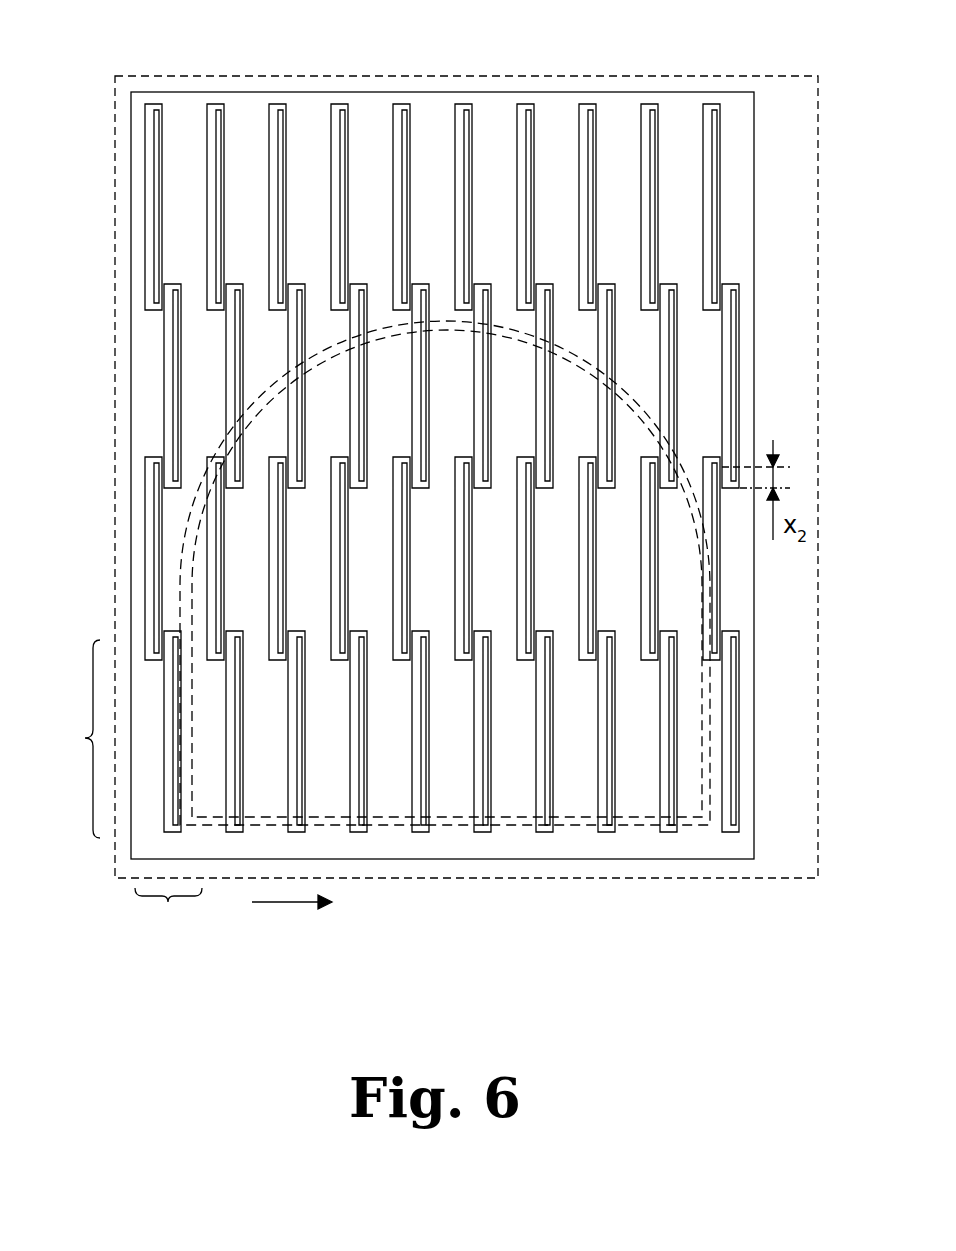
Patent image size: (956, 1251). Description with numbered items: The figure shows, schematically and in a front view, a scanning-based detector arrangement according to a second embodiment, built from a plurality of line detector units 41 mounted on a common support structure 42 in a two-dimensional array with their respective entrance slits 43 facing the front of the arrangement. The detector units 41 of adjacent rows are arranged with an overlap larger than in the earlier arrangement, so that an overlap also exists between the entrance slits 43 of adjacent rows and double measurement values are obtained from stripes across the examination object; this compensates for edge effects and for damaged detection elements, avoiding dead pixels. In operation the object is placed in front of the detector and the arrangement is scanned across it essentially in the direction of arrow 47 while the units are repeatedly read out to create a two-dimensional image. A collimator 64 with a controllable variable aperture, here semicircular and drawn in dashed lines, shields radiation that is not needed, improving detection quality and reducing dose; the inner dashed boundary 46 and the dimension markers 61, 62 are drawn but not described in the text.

The line detector unit 41 is at (224, 110).
The common support structure 42 is at (132, 127).
The entrance slit 43 is at (205, 118).
The inner dashed boundary 46 is at (645, 818).
The arrow 47 is at (271, 902).
The column pitch 61 is at (168, 913).
The row pitch 62 is at (70, 739).
The collimator 64 is at (453, 826).